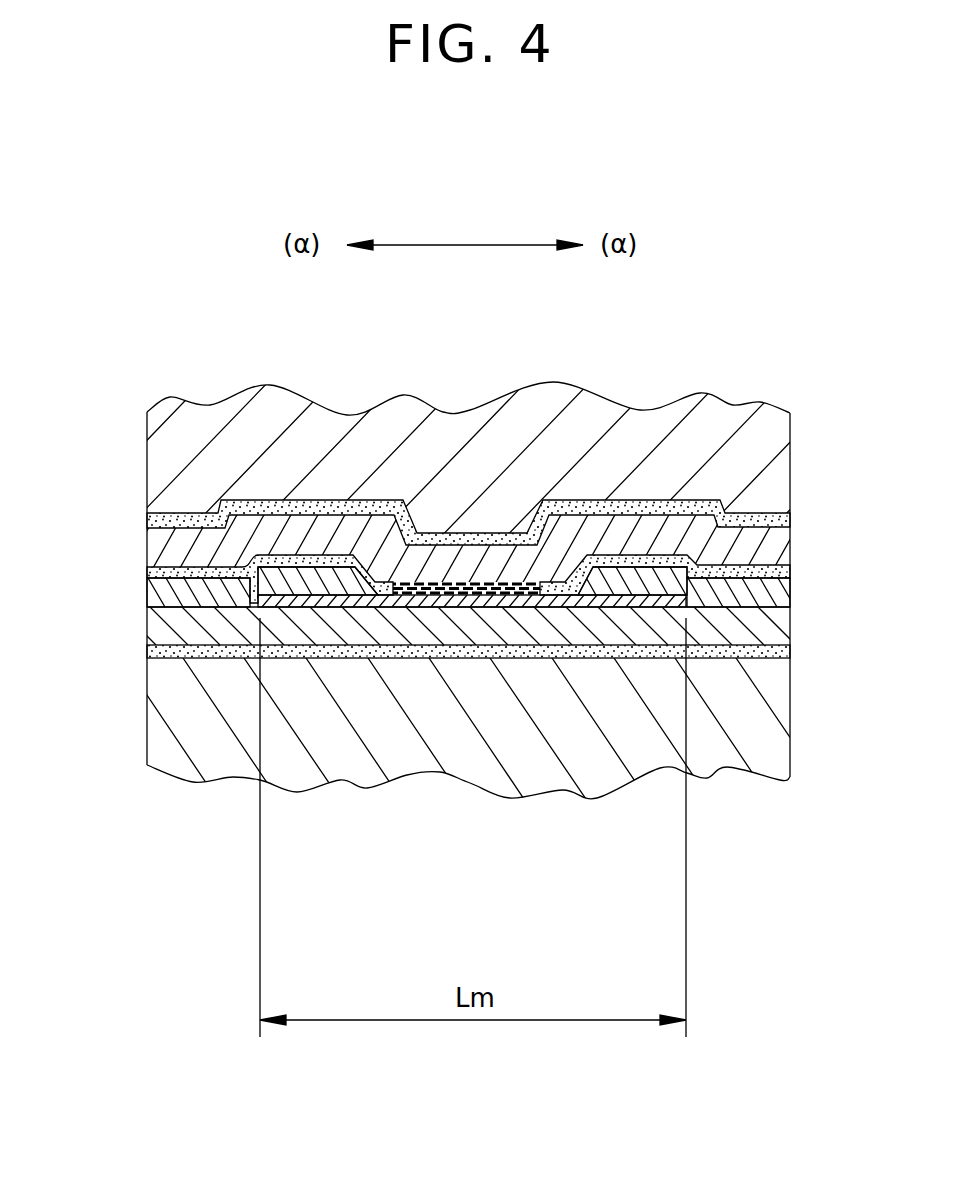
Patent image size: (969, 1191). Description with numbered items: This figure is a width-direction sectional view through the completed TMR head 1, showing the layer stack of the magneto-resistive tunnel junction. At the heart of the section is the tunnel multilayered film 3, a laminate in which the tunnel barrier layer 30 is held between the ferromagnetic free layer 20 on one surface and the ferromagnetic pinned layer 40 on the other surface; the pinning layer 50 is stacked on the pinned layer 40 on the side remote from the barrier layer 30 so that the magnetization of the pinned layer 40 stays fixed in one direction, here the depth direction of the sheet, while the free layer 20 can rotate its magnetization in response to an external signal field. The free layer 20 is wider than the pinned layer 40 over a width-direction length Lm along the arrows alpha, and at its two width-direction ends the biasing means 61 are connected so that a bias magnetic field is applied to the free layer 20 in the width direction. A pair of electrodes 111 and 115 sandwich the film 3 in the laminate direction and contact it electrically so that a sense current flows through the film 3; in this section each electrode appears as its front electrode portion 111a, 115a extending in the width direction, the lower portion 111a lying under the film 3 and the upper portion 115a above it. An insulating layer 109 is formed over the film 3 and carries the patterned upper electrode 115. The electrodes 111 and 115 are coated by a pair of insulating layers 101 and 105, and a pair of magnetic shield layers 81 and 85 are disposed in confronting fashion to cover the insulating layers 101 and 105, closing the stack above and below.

The TMR head 1 is at (668, 224).
The tunnel multilayered film 3 is at (63, 435).
The ferromagnetic free layer 20 is at (352, 596).
The tunnel barrier layer 30 is at (360, 590).
The ferromagnetic pinned layer 40 is at (374, 581).
The pinning layer 50 is at (388, 587).
The biasing means 61 is at (163, 593).
The shield layer 81 is at (778, 712).
The shield layer 85 is at (777, 475).
The insulating layer 101 is at (785, 652).
The insulating layer 105 is at (785, 512).
The insulating layer 109 is at (158, 572).
The electrode 111 is at (788, 641).
The front electrode portion 111a is at (508, 635).
The electrode 115 is at (783, 540).
The front electrode portion 115a is at (508, 537).